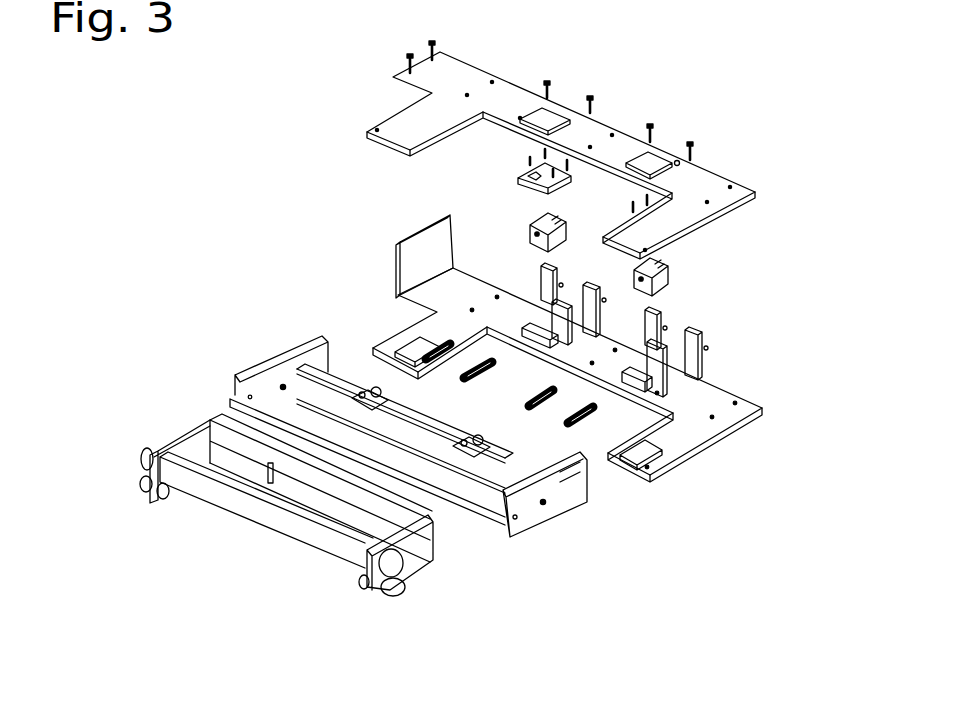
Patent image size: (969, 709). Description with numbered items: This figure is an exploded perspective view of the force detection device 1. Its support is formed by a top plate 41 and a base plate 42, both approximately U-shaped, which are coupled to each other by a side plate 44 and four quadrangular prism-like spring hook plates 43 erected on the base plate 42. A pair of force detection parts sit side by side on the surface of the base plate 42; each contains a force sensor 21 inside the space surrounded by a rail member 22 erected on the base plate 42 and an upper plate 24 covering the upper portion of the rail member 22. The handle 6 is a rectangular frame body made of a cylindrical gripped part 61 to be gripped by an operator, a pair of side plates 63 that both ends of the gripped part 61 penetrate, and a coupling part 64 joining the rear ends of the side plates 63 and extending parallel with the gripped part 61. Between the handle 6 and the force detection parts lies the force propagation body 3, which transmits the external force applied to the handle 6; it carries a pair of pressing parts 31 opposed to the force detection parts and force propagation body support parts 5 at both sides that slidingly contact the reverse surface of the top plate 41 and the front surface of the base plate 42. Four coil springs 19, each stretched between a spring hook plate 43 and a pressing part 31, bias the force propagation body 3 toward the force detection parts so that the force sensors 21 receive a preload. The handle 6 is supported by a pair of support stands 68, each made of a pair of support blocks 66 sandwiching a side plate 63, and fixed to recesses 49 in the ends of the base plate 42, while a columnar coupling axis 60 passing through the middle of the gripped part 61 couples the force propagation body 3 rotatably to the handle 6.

The force detection device 1 is at (680, 122).
The force propagation body 3 is at (423, 428).
The force propagation body support parts 5 is at (282, 352).
The handle 6 is at (220, 493).
The coil spring 19 is at (440, 360).
The force sensor 21 is at (552, 223).
The rail member 22 is at (565, 330).
The upper plate 24 is at (522, 177).
The pressing part 31 is at (370, 390).
The top plate 41 is at (730, 193).
The base plate 42 is at (762, 408).
The spring hook plate 43 is at (547, 280).
The side plate 44 is at (402, 262).
The recess 49 is at (412, 347).
The coupling axis 60 is at (263, 478).
The gripped part 61 is at (318, 537).
The side plate 63 is at (183, 440).
The coupling part 64 is at (238, 432).
The support block 66 is at (145, 477).
The support stand 68 is at (77, 508).